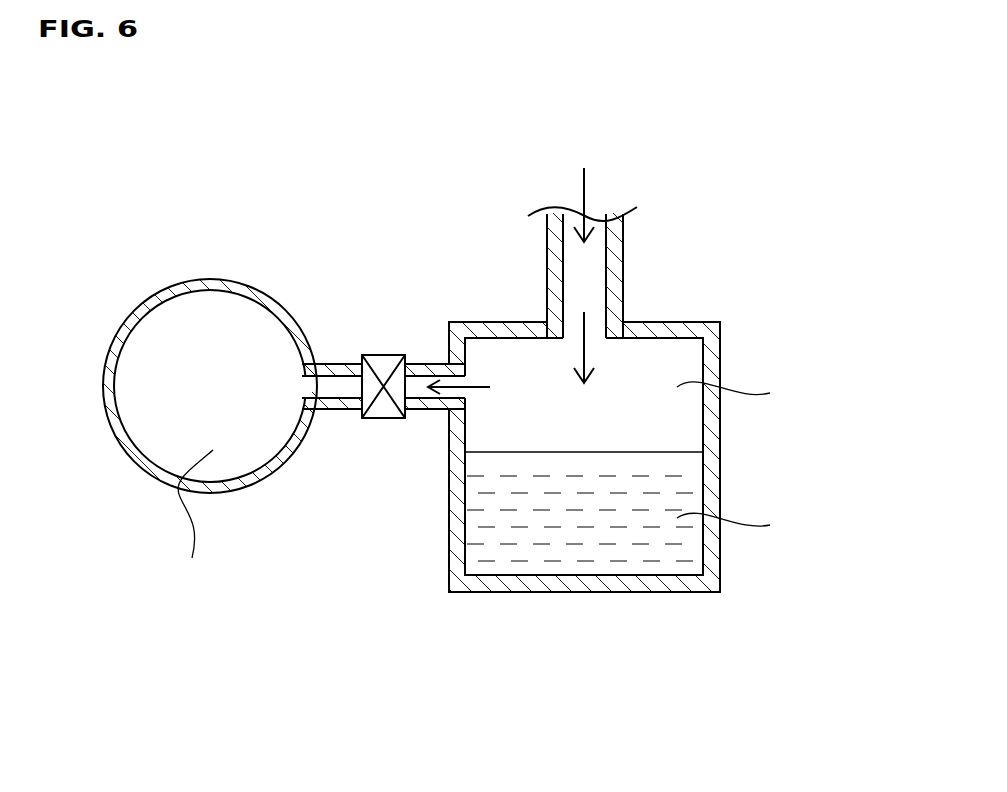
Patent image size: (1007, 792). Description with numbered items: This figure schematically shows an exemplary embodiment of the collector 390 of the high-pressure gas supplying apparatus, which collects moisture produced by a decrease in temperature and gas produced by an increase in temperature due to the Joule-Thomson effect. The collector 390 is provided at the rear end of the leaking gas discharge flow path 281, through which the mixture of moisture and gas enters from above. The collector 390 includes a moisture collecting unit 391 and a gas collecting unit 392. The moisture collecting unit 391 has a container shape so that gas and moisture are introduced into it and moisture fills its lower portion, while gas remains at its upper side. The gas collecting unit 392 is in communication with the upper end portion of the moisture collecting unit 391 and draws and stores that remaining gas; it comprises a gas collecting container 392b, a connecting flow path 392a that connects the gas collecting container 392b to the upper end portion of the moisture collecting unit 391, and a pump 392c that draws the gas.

The collector 390 is at (480, 403).
The moisture collecting unit 391 is at (668, 597).
The leaking gas discharge flow path 281 is at (615, 272).
The gas collecting unit 392 is at (284, 335).
The connecting flow path 392a is at (332, 370).
The gas collecting container 392b is at (255, 288).
The pump 392c is at (383, 352).